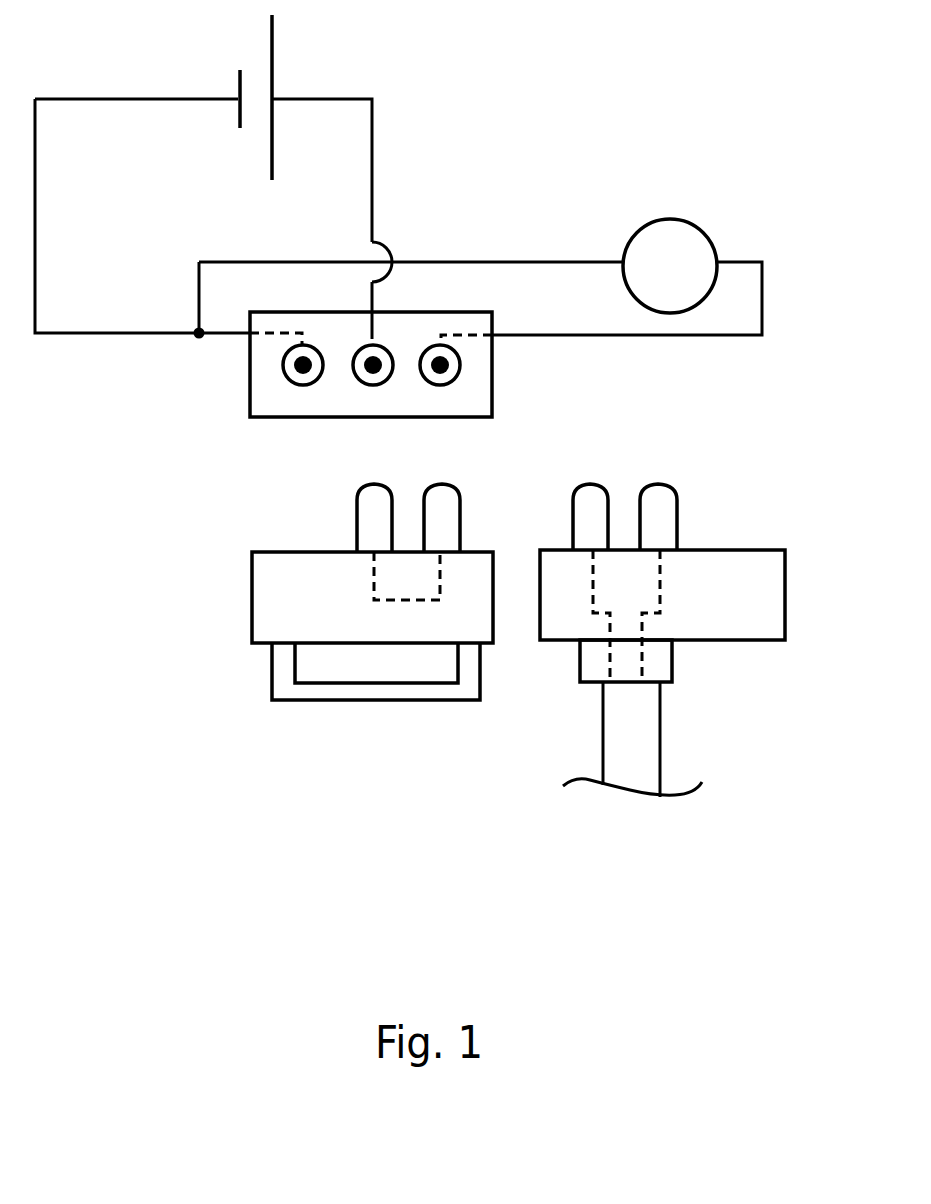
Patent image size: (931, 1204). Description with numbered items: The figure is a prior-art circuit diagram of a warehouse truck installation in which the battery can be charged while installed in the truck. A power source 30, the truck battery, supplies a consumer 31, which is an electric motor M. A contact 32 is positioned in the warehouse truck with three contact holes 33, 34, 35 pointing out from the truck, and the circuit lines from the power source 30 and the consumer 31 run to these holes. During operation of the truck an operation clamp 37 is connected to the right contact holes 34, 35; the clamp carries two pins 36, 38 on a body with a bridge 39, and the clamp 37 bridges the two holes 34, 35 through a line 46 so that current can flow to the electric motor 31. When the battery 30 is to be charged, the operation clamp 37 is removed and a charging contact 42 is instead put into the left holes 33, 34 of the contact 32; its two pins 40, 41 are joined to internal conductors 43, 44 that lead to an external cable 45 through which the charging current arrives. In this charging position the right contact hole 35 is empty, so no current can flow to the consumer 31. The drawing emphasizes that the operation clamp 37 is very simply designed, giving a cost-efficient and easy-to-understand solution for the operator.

The power source 30 is at (276, 69).
The consumer 31 is at (667, 220).
The contact 32 is at (248, 360).
The contact hole 33 is at (281, 376).
The contact hole 34 is at (359, 382).
The contact hole 35 is at (436, 384).
The first plug pin 36 is at (357, 517).
The operation clamp 37 is at (252, 603).
The second plug pin 38 is at (457, 485).
The plug bridge 39 is at (273, 703).
The first socket pin 40 is at (603, 483).
The second socket pin 41 is at (670, 483).
The charging contact 42 is at (715, 548).
The first socket conductor 43 is at (592, 613).
The second socket conductor 44 is at (663, 613).
The external cable 45 is at (600, 730).
The line 46 is at (373, 601).